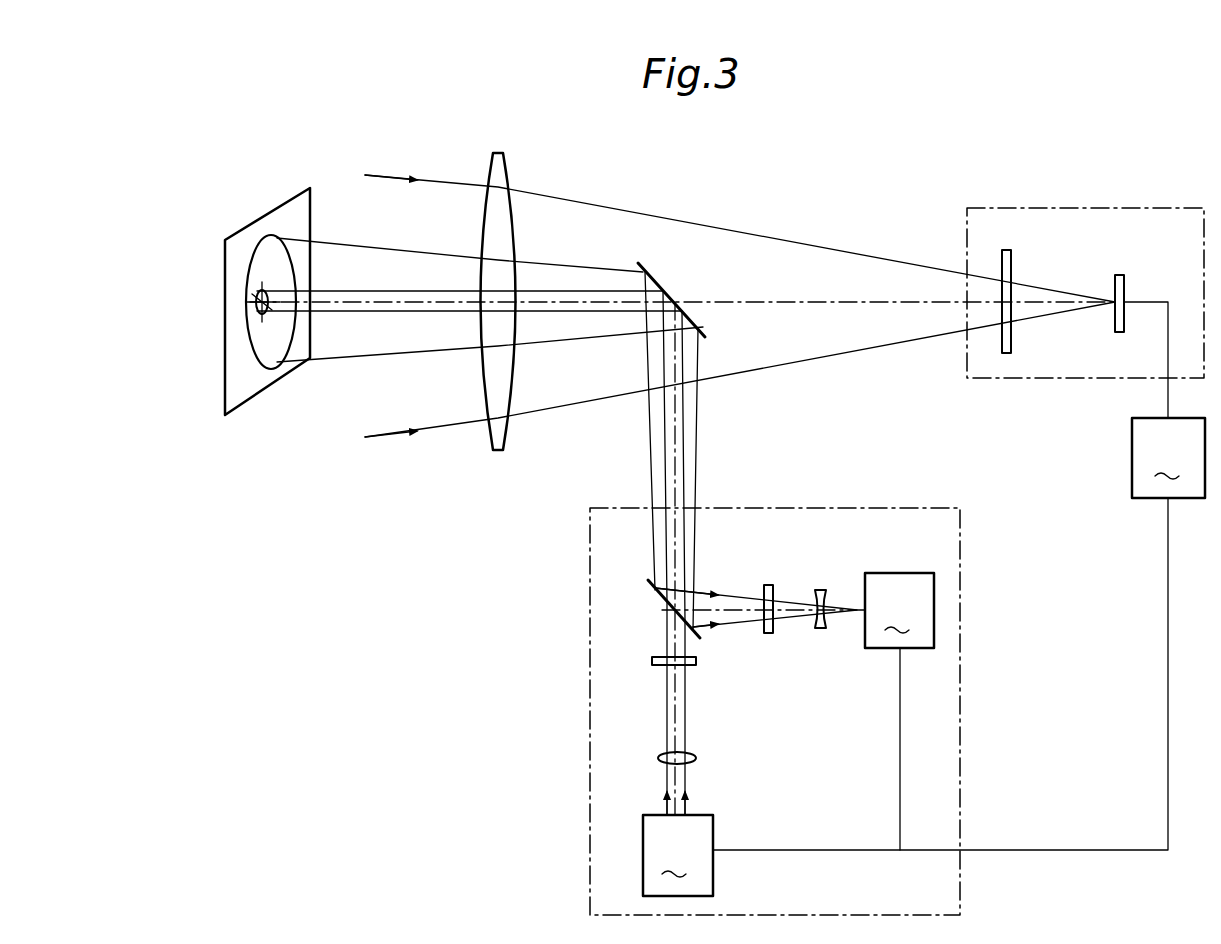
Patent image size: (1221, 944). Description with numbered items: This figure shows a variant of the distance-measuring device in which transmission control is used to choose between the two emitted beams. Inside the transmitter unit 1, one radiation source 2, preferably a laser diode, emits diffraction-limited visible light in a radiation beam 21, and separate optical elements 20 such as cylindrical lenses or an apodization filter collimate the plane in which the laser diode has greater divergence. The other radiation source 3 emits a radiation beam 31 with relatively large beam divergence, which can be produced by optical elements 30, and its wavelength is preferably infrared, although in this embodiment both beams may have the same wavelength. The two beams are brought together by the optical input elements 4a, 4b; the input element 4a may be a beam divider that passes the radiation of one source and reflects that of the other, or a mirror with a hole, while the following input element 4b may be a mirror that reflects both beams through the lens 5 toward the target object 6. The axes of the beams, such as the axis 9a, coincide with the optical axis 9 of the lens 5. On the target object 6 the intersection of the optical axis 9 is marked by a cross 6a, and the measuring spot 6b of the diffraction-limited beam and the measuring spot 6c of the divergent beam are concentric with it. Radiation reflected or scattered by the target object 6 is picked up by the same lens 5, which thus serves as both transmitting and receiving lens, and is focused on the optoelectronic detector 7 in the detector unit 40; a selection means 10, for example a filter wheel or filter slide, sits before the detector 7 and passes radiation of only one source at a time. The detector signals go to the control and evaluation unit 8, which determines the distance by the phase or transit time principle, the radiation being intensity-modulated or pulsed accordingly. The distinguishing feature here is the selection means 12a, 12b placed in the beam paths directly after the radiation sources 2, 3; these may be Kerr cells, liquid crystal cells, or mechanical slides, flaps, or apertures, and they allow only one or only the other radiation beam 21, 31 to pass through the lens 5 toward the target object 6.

The transmitter unit 1 is at (590, 583).
The radiation source 2 is at (678, 855).
The radiation source 3 is at (899, 711).
The optical input element 4a is at (658, 596).
The optical input element 4b is at (695, 318).
The lens 5 is at (490, 180).
The target object 6 is at (284, 212).
The cross 6a is at (258, 294).
The measuring spot 6b is at (253, 302).
The measuring spot 6c is at (256, 364).
The optoelectronic detector 7 is at (1125, 312).
The control and evaluation unit 8 is at (1168, 458).
The optical axis 9 is at (782, 302).
The axis of radiation beam 9a is at (383, 302).
The selection means 10 is at (1012, 337).
The selection means 12a is at (773, 594).
The selection means 12b is at (688, 668).
The optical elements 20 is at (690, 762).
The radiation beam 21 is at (668, 729).
The optical elements 30 is at (820, 632).
The radiation beam 31 is at (750, 602).
The detector unit 40 is at (1104, 208).